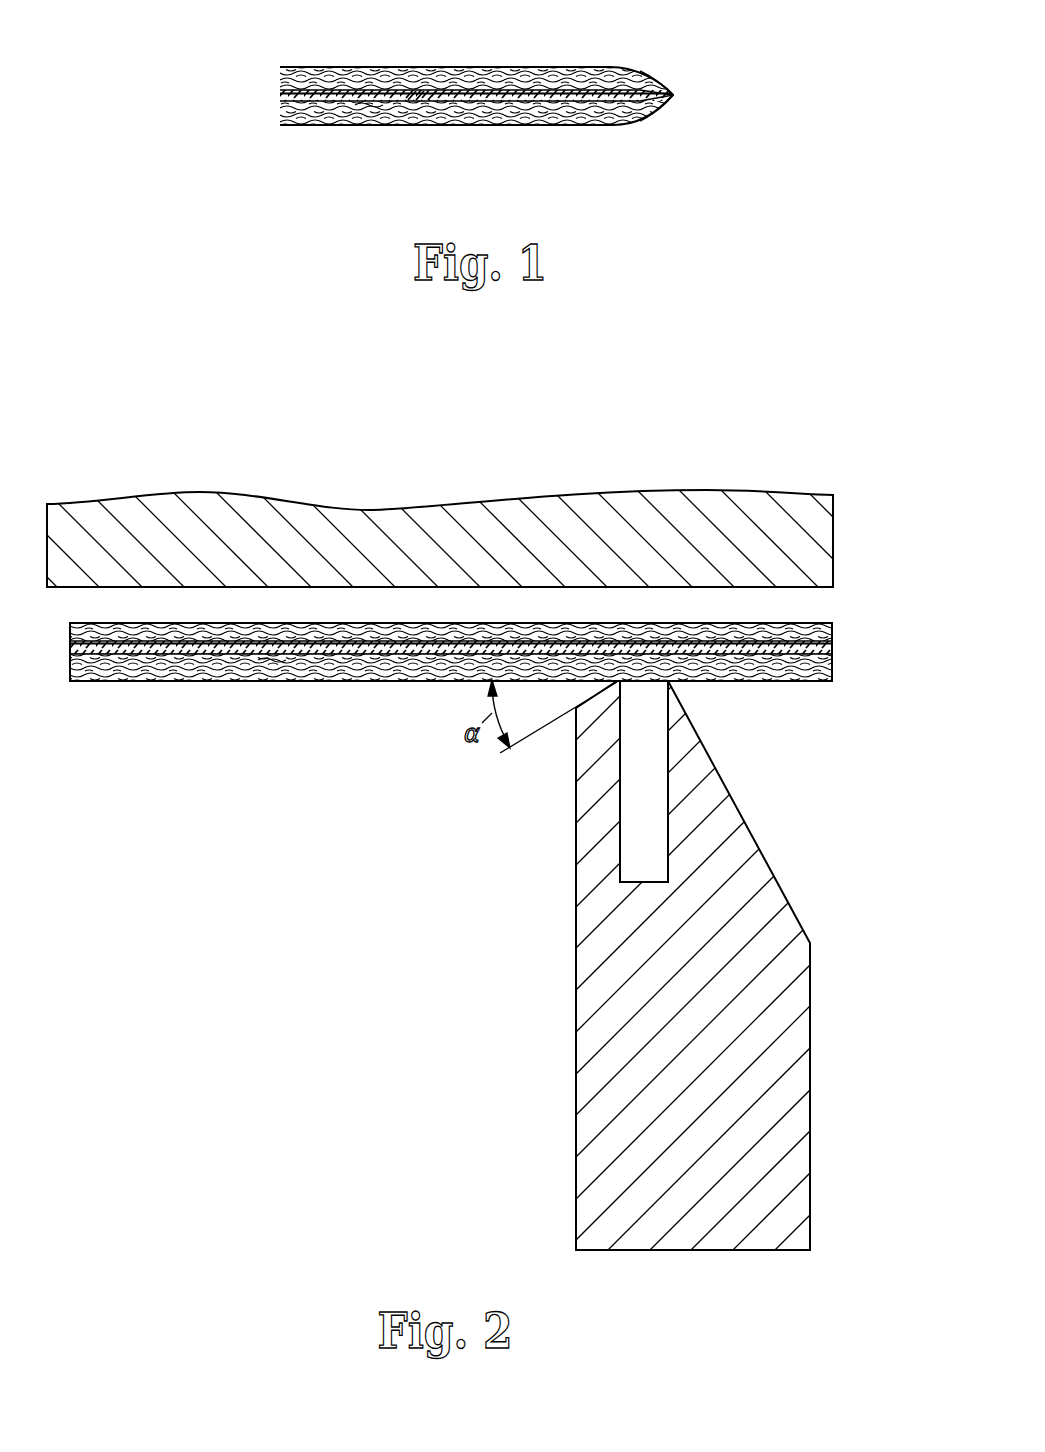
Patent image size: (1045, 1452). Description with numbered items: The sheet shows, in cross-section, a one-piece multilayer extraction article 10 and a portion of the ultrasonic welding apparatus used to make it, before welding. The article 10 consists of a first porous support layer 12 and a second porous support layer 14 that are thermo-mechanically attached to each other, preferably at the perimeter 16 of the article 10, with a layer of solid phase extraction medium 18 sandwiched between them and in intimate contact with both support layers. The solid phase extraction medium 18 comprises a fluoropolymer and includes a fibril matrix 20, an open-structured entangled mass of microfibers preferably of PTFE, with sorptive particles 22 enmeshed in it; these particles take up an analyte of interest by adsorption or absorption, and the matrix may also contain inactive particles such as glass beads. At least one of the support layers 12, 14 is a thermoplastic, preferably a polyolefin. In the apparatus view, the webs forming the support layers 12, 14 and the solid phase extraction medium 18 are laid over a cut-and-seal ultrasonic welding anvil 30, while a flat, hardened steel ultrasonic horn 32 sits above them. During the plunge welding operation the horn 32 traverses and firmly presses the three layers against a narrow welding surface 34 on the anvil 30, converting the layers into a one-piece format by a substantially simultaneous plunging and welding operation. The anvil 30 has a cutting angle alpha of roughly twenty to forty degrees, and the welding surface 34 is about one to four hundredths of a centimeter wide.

In FIG. 1, the one-piece multilayer extraction article 10 is at (496, 98).
In FIG. 1, the first porous support layer 12 is at (508, 73).
In FIG. 2, the first porous support layer 12 is at (471, 664).
In FIG. 1, the second porous support layer 14 is at (568, 108).
In FIG. 2, the second porous support layer 14 is at (226, 676).
In FIG. 1, the perimeter 16 is at (673, 95).
In FIG. 1, the solid phase extraction medium 18 is at (477, 98).
In FIG. 2, the solid phase extraction medium 18 is at (415, 650).
In FIG. 1, the fibril matrix 20 is at (370, 99).
In FIG. 2, the fibril matrix 20 is at (270, 648).
In FIG. 1, the sorptive particles 22 is at (437, 98).
In FIG. 2, the ultrasonic welding anvil 30 is at (555, 950).
In FIG. 2, the ultrasonic horn 32 is at (170, 507).
In FIG. 2, the welding surface 34 is at (668, 870).